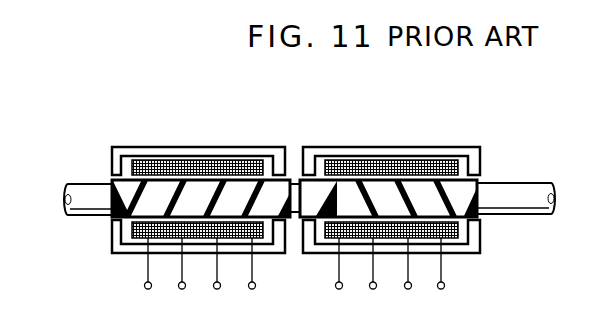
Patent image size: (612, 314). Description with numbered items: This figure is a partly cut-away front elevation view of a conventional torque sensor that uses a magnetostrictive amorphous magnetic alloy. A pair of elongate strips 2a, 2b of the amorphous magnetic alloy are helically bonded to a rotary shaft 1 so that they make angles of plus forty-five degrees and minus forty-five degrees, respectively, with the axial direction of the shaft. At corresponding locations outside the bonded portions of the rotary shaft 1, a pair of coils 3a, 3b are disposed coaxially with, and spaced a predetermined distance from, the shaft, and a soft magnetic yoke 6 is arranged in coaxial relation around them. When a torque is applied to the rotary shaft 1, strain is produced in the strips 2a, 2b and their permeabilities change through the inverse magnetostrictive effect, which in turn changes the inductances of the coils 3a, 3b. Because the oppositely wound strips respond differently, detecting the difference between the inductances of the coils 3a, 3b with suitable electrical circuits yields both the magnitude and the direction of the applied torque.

The rotary shaft 1 is at (517, 190).
The elongate strip of magnetostrictive amorphous magnetic alloy 2a is at (103, 212).
The elongate strip of magnetostrictive amorphous magnetic alloy 2b is at (472, 207).
The coil 3a is at (216, 165).
The coil 3b is at (413, 165).
The soft magnetic yoke 6 is at (306, 148).